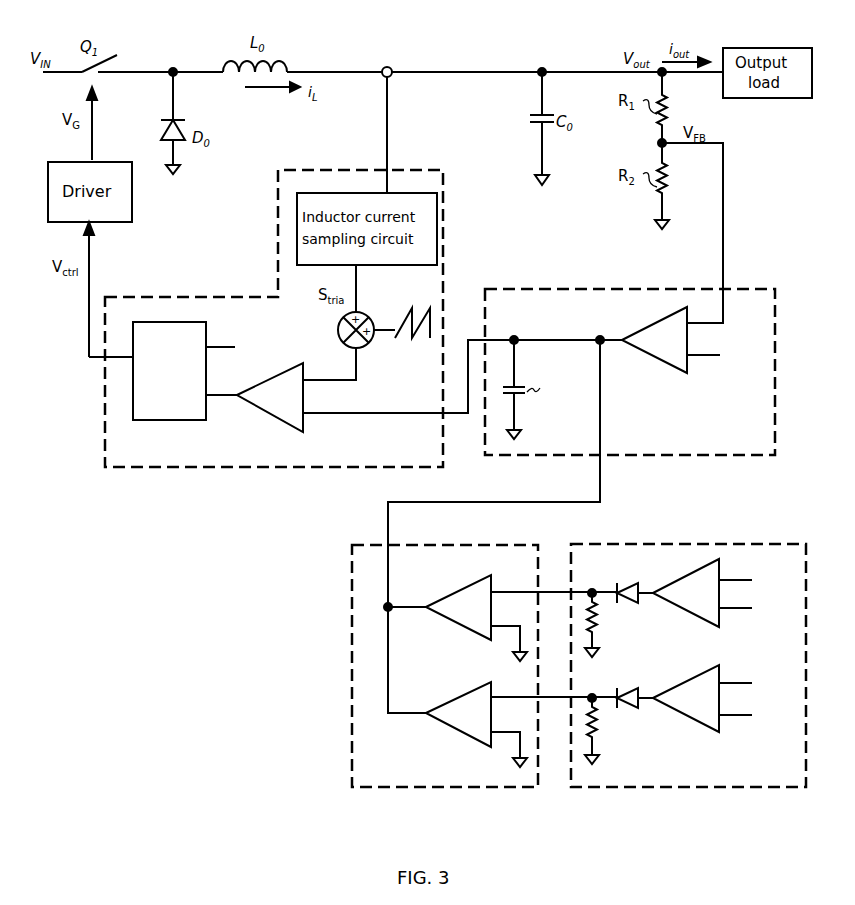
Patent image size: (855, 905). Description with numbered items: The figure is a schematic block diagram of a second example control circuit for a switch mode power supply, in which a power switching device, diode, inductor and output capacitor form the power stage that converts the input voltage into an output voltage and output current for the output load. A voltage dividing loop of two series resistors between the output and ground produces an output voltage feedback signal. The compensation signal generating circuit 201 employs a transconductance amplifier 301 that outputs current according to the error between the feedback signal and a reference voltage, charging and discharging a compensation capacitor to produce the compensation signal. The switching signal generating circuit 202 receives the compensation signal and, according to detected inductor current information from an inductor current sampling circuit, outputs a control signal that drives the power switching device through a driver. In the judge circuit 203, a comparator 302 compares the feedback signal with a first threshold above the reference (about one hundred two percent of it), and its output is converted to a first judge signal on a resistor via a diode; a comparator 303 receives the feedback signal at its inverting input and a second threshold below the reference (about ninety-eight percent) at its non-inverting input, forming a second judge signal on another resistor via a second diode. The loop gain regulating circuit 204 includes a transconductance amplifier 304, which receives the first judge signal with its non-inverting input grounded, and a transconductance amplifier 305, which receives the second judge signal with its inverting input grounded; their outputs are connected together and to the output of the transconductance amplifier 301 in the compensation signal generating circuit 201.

The compensation signal generating circuit 201 is at (630, 372).
The switching signal generating circuit 202 is at (363, 318).
The judge circuit 203 is at (688, 665).
The loop gain regulating circuit 204 is at (445, 666).
The transconductance amplifier 301 is at (644, 328).
The comparator 302 is at (716, 593).
The comparator 303 is at (716, 698).
The transconductance amplifier 304 is at (448, 597).
The transconductance amplifier 305 is at (455, 701).